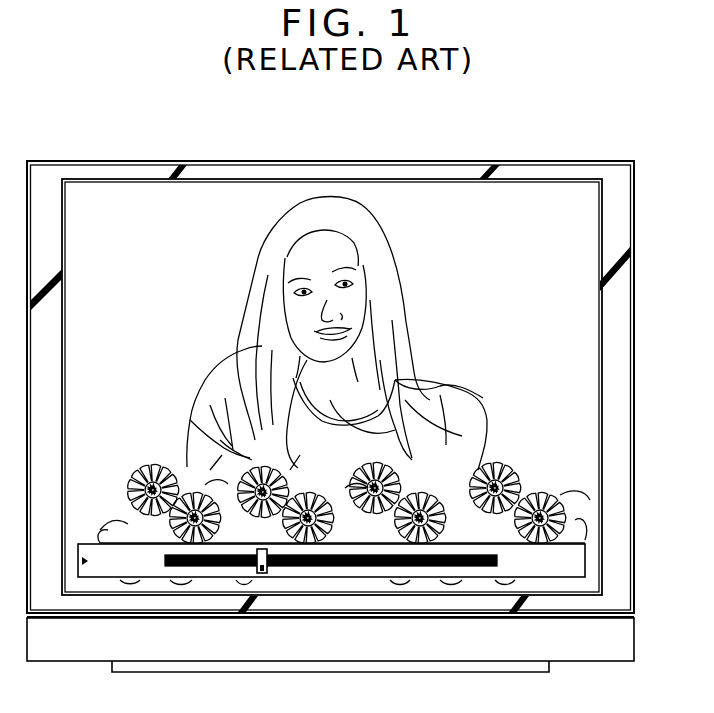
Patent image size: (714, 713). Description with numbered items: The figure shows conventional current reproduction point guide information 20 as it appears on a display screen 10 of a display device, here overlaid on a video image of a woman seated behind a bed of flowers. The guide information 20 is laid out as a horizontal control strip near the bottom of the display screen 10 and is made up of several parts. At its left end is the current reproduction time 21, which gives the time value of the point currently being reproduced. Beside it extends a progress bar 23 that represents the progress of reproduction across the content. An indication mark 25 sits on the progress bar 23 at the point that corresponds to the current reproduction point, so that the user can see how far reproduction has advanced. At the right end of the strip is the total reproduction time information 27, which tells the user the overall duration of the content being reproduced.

The display screen 10 is at (345, 161).
The current reproduction point guide information 20 is at (582, 540).
The current reproduction time 21 is at (125, 578).
The progress bar 23 is at (195, 568).
The indication mark 25 is at (258, 576).
The total reproduction time information 27 is at (548, 578).